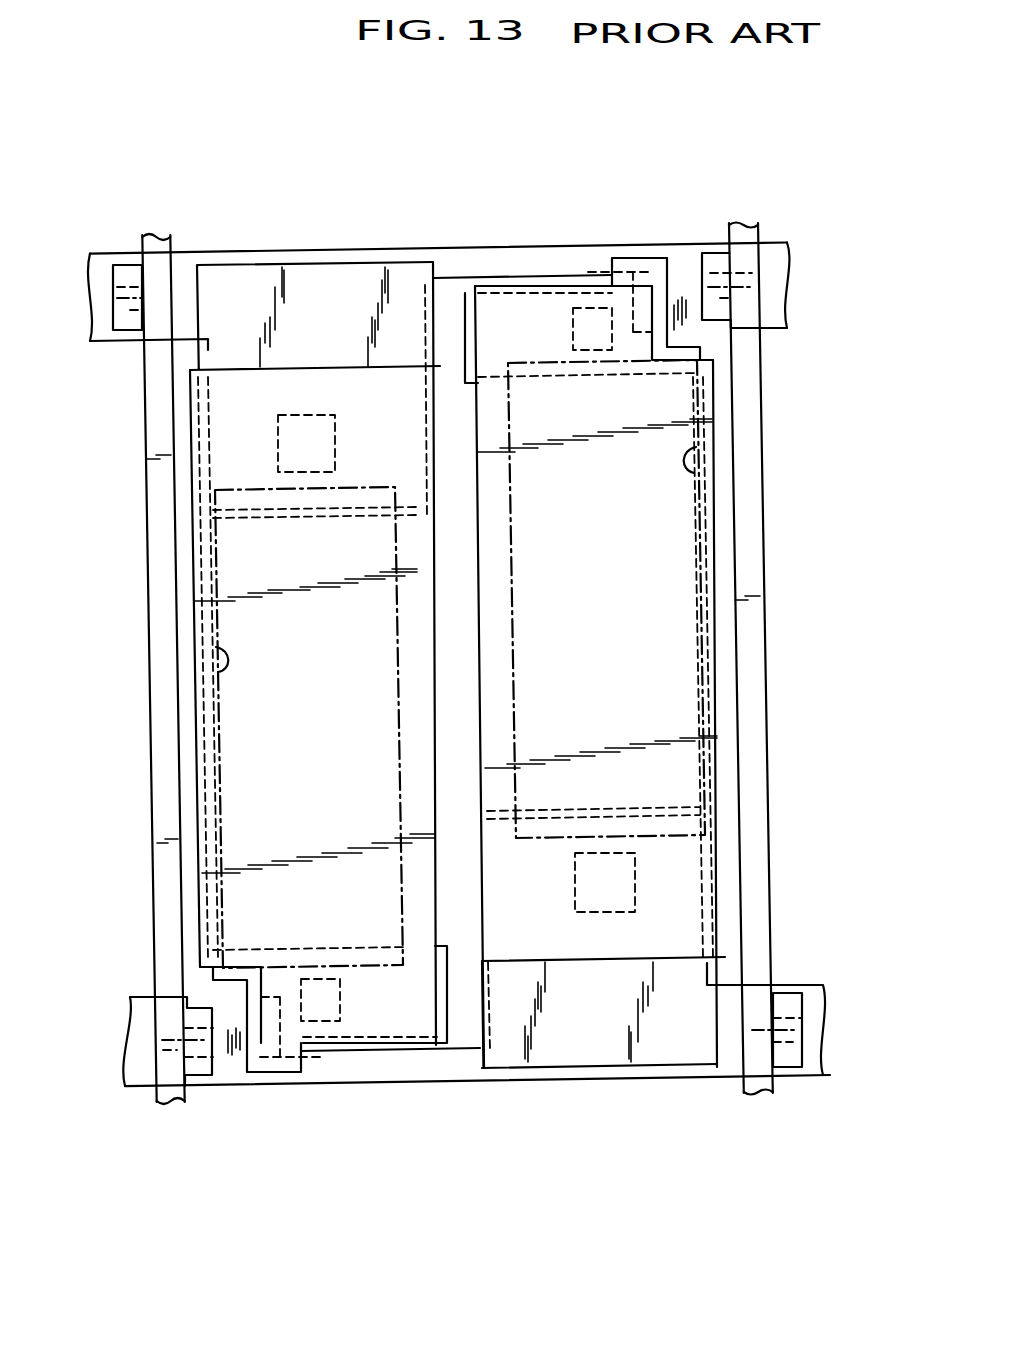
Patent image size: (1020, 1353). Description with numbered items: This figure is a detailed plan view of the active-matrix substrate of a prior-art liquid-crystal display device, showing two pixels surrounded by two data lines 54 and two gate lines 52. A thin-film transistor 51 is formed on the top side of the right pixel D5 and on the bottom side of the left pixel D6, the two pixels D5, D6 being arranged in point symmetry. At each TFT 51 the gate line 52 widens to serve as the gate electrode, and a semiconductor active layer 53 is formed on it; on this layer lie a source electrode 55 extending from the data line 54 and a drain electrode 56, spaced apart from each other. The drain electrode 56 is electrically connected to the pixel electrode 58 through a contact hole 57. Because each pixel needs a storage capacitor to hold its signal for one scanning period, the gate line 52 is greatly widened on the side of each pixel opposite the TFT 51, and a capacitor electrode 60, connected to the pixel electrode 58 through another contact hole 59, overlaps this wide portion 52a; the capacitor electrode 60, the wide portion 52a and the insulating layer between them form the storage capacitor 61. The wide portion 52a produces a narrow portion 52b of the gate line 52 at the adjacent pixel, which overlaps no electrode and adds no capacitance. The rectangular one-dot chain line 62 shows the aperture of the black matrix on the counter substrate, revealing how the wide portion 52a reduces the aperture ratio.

The thin-film transistor 51 is at (229, 1062).
The gate line 52 is at (441, 1085).
The wide portion of the gate line 52a is at (677, 943).
The narrow portion of the gate line 52b is at (383, 1087).
The semiconductor active layer 53 is at (228, 1038).
The data line 54 is at (745, 597).
The source electrode 55 is at (197, 1087).
The drain electrode 56 is at (271, 1087).
The contact hole 57 is at (342, 995).
The pixel electrode 58 is at (648, 545).
The contact hole 59 is at (628, 886).
The capacitor electrode 60 is at (562, 1033).
The storage capacitor 61 is at (511, 1080).
The aperture of black matrix 62 is at (697, 473).
The right pixel D5 is at (735, 712).
The left pixel D6 is at (185, 742).